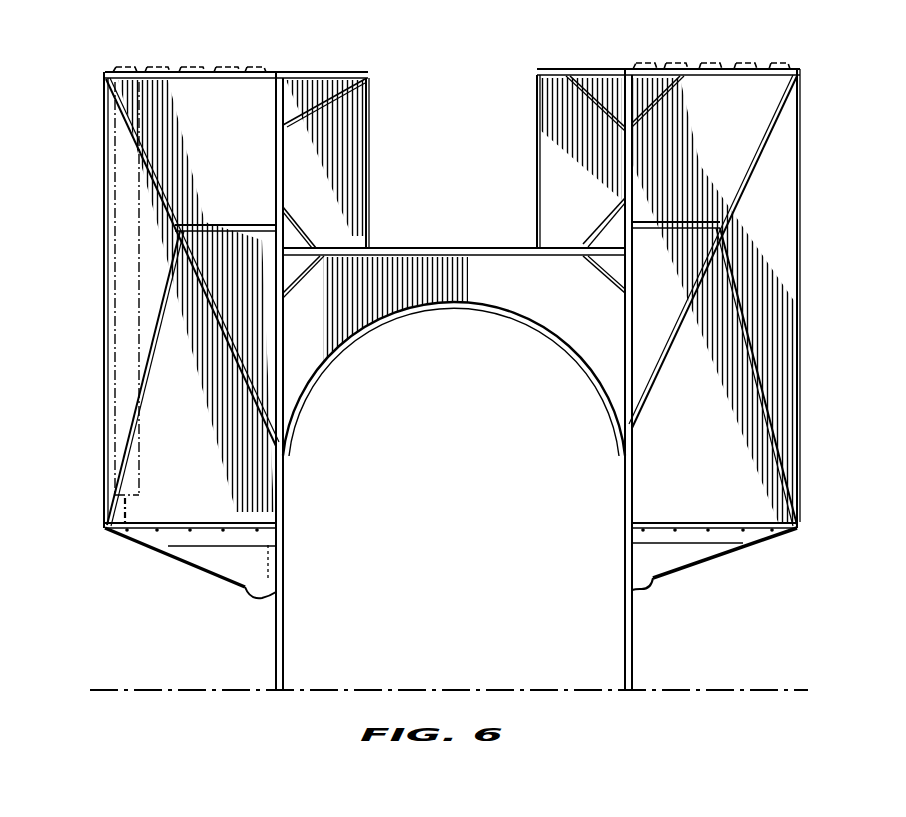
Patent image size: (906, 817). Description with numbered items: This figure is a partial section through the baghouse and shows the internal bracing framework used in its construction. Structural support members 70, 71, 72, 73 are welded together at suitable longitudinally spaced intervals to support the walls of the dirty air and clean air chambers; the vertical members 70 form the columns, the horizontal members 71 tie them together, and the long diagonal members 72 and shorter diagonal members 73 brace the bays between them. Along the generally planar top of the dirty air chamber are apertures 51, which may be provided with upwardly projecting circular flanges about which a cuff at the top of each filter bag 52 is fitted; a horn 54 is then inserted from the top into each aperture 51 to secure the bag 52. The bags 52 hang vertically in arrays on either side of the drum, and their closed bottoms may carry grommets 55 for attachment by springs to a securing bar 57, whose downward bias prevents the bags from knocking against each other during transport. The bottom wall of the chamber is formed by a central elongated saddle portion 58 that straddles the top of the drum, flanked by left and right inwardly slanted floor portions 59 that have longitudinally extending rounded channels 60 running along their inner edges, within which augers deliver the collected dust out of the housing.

The apertures 51 is at (263, 67).
The filter bags 52 is at (113, 172).
The horn 54 is at (118, 85).
The grommets 55 is at (135, 500).
The securing bar 57 is at (278, 524).
The saddle portion 58 is at (452, 306).
The floor portions 59 is at (196, 567).
The rounded channels 60 is at (258, 596).
The structural support member 70 is at (284, 344).
The structural support member 71 is at (243, 223).
The structural support member 72 is at (215, 290).
The structural support member 73 is at (248, 102).